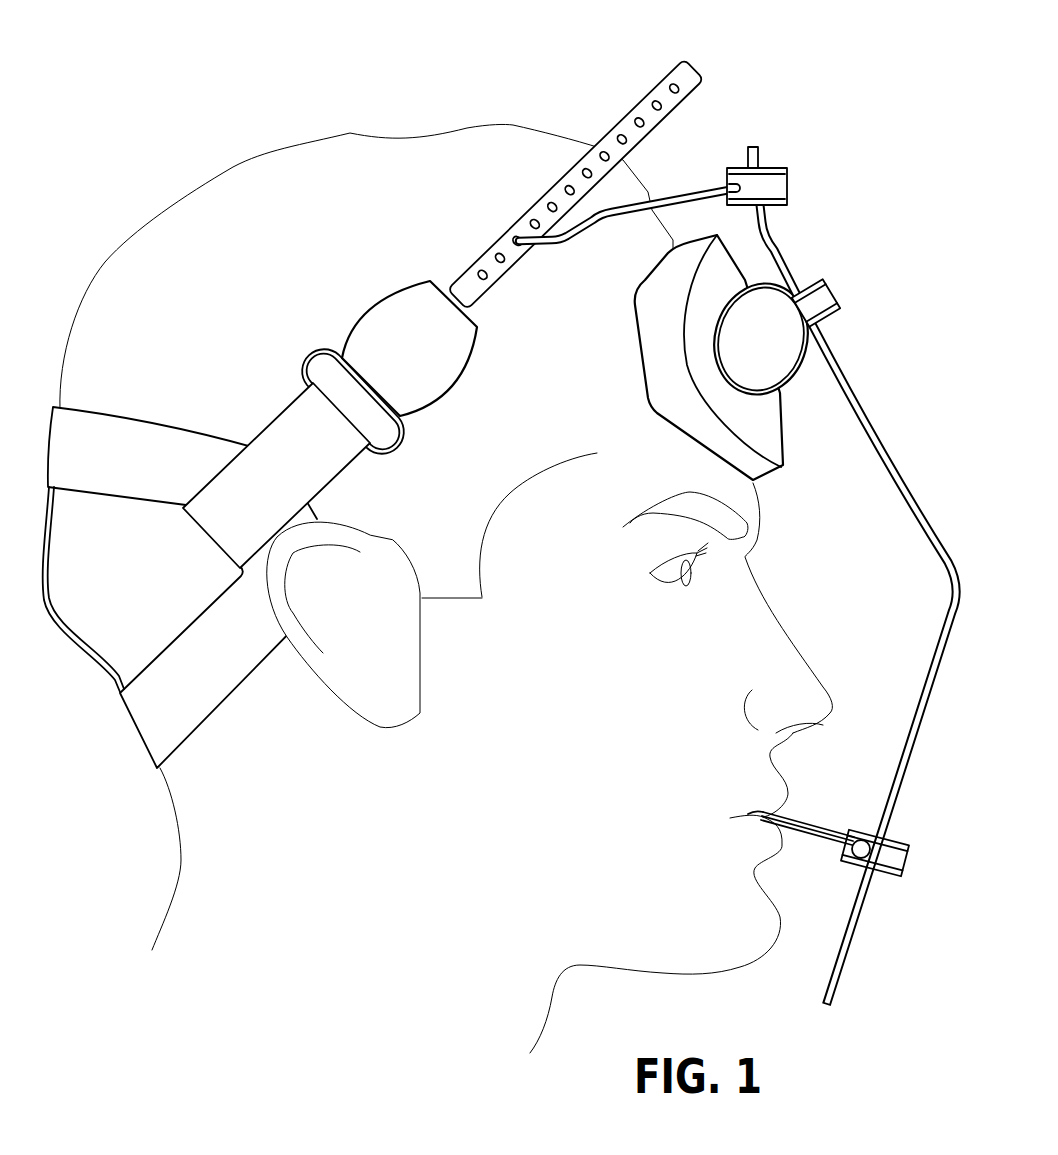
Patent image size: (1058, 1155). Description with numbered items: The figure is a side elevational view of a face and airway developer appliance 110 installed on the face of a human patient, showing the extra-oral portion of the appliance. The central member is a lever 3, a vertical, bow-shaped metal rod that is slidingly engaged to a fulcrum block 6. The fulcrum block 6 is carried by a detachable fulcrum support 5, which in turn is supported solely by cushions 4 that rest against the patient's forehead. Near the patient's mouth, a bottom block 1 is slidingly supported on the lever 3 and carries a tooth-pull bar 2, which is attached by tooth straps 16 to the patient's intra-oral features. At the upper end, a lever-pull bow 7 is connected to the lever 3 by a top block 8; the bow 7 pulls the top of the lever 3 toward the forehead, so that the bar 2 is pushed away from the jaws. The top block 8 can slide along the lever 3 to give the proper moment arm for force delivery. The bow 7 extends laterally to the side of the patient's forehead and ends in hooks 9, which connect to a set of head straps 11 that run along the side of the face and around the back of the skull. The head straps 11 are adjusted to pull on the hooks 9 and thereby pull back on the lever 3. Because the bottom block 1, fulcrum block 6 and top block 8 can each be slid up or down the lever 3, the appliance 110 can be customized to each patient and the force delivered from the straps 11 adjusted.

The face and airway developer appliance 110 is at (757, 80).
The bottom block 1 is at (909, 860).
The tooth-pull bar 2 is at (861, 834).
The lever 3 is at (948, 588).
The cushions 4 is at (786, 452).
The fulcrum support 5 is at (809, 372).
The fulcrum block 6 is at (840, 301).
The lever-pull bow 7 is at (684, 196).
The top block 8 is at (788, 183).
The hooks 9 is at (530, 250).
The head straps 11 is at (270, 424).
The tooth straps 16 is at (813, 846).